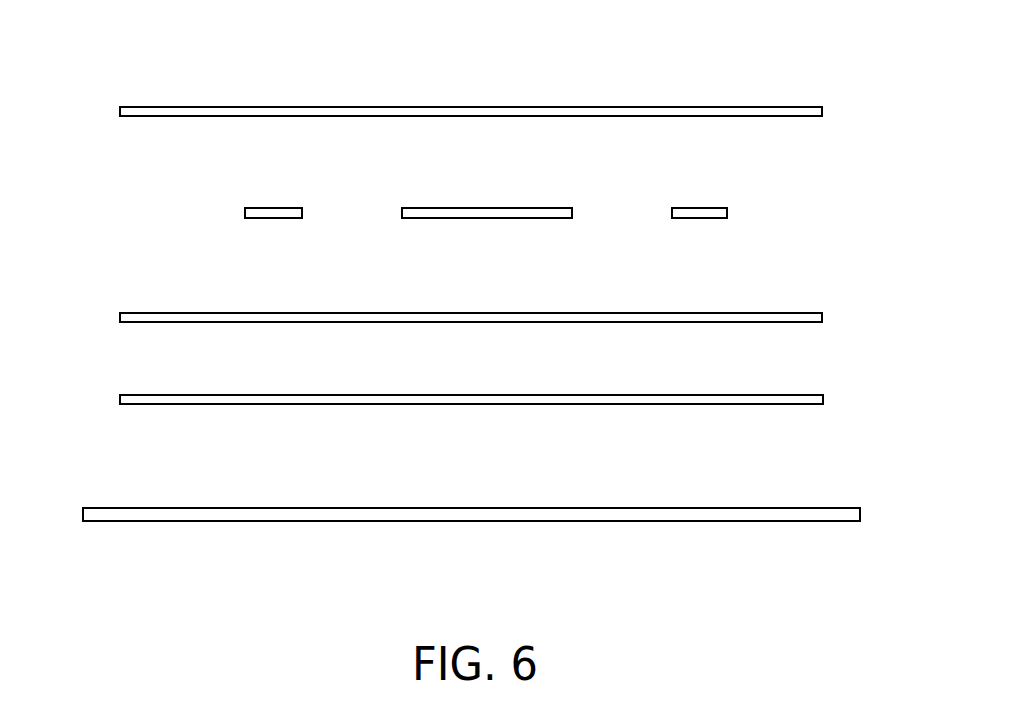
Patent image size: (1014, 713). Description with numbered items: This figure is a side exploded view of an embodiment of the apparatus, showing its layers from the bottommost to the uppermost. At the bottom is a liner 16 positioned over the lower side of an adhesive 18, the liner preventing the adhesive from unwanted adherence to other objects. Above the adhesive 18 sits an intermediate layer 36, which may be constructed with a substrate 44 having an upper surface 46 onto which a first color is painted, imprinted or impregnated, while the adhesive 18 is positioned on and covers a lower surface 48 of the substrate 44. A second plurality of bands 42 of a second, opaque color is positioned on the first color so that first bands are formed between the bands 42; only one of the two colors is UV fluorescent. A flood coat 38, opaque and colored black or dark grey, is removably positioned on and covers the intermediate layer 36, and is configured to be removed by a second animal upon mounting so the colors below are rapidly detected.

The liner 16 is at (860, 512).
The adhesive 18 is at (823, 399).
The intermediate layer 36 is at (792, 185).
The flood coat 38 is at (822, 110).
The second plurality of bands 42 is at (263, 207).
The substrate 44 is at (118, 317).
The upper surface 46 is at (155, 313).
The lower surface 48 is at (148, 322).